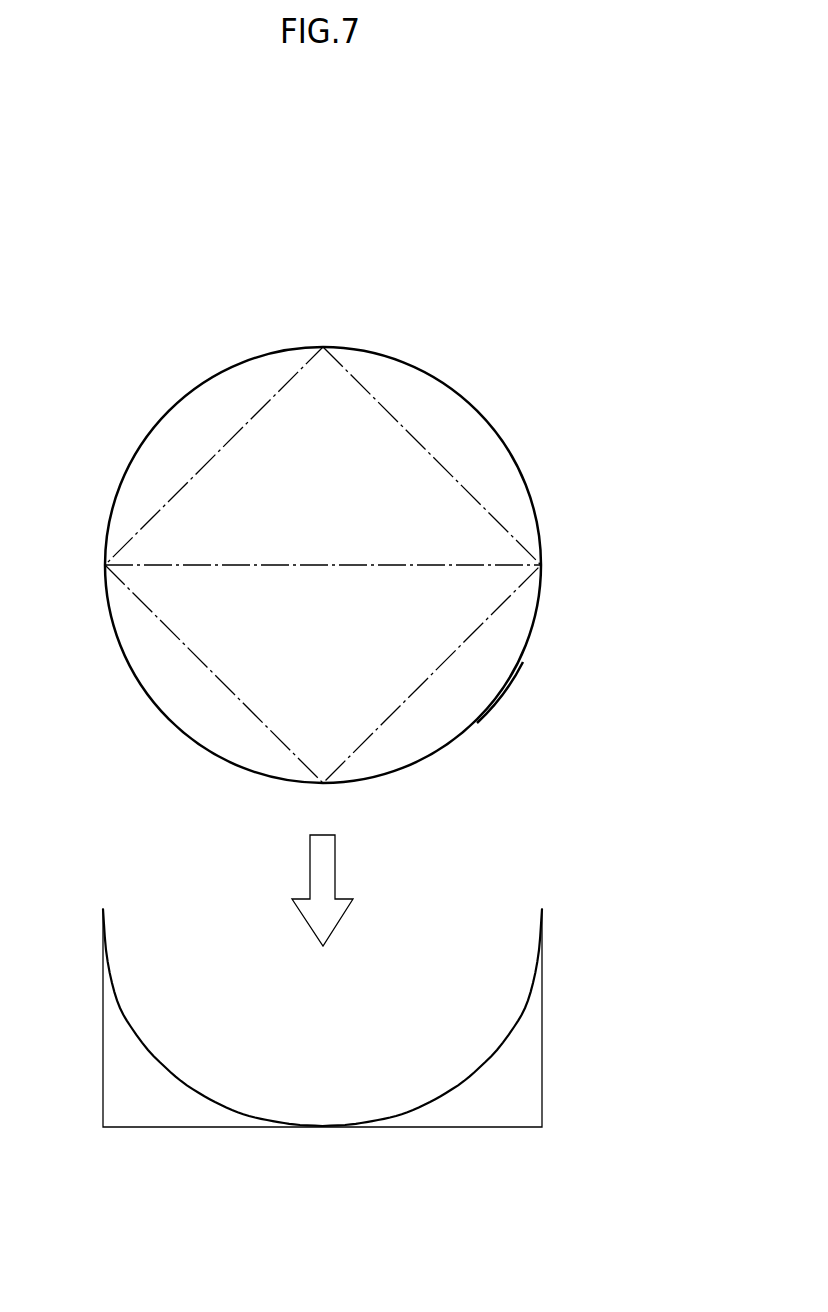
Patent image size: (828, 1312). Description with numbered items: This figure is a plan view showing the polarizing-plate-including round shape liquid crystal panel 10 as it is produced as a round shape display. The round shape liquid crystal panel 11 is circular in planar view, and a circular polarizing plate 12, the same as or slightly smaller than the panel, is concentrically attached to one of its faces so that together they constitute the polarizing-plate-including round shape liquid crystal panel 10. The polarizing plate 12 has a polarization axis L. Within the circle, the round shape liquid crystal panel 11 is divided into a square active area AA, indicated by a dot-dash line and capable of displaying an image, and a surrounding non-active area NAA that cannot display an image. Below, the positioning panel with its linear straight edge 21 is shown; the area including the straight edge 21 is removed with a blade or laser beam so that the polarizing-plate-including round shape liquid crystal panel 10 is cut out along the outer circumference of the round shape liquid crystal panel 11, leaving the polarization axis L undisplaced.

The polarizing-plate-including round shape liquid crystal panel 10 is at (387, 565).
The round shape liquid crystal panel 11 is at (523, 662).
The polarizing plate 12 is at (477, 723).
The straight edge 21 is at (167, 1128).
The polarization axis L is at (279, 565).
The active area AA is at (460, 478).
The non-active area NAA is at (445, 410).